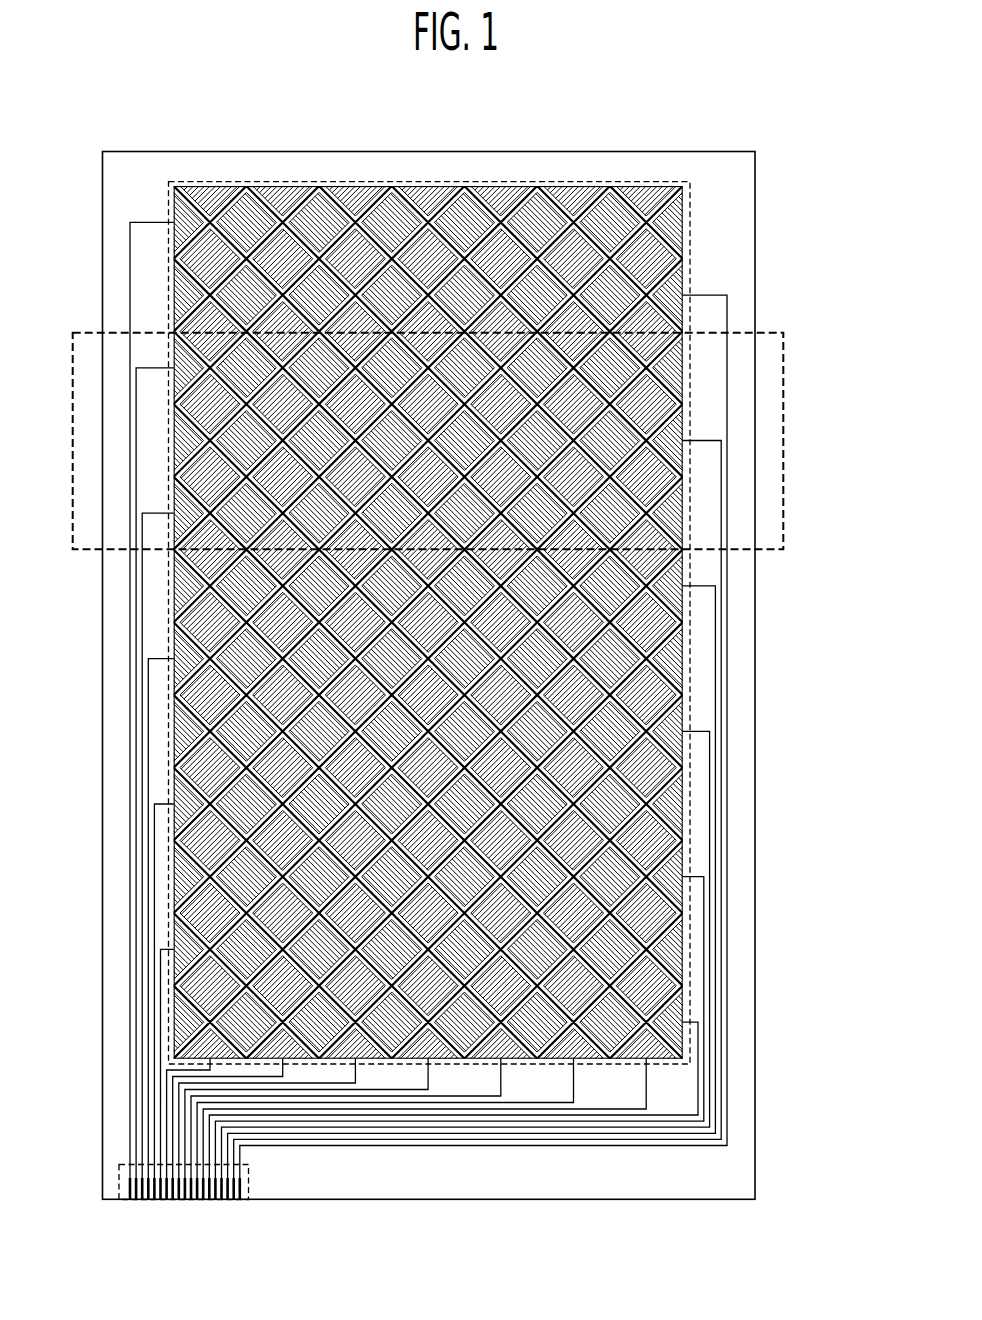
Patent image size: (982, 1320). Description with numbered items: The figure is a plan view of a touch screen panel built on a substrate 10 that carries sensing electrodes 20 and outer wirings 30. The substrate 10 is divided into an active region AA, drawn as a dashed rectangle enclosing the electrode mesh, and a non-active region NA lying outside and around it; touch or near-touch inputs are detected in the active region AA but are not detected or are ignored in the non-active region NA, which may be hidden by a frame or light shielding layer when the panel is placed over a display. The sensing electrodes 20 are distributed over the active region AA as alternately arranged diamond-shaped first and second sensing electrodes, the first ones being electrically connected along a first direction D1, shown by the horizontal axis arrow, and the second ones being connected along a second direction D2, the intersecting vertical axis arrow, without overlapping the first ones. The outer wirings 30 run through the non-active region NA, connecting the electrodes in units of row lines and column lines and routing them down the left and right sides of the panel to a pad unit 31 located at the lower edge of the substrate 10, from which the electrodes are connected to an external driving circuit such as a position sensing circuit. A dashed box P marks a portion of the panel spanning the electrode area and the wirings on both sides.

The substrate 10 is at (563, 152).
The sensing electrodes 20 is at (491, 660).
The outer wirings 30 is at (130, 268).
The pad unit 31 is at (248, 1181).
The active region AA is at (690, 203).
The non-active region NA is at (747, 258).
The pixel region P is at (783, 440).
The first direction D1 is at (70, 1227).
The second direction D2 is at (70, 1227).